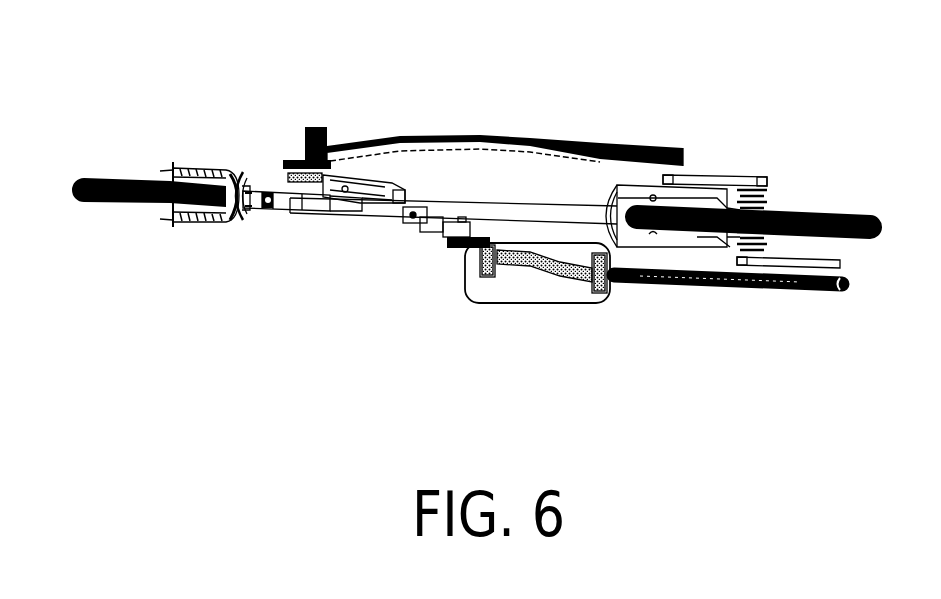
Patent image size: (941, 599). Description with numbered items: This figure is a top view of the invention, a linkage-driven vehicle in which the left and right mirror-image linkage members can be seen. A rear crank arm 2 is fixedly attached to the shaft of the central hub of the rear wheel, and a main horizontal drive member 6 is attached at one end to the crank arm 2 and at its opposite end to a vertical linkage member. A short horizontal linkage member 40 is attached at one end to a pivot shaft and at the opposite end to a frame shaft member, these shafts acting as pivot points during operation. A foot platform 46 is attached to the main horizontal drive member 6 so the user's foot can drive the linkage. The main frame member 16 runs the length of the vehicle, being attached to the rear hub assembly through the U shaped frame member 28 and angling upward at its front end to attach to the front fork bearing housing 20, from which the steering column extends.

The left rear crank arm 2 is at (803, 262).
The main horizontal drive member 6 is at (738, 290).
The main frame member 16 is at (475, 203).
The front fork bearing housing 20 is at (242, 184).
The U shaped frame member 28 is at (636, 193).
The short horizontal linkage member 40 is at (436, 236).
The foot platform 46 is at (532, 285).